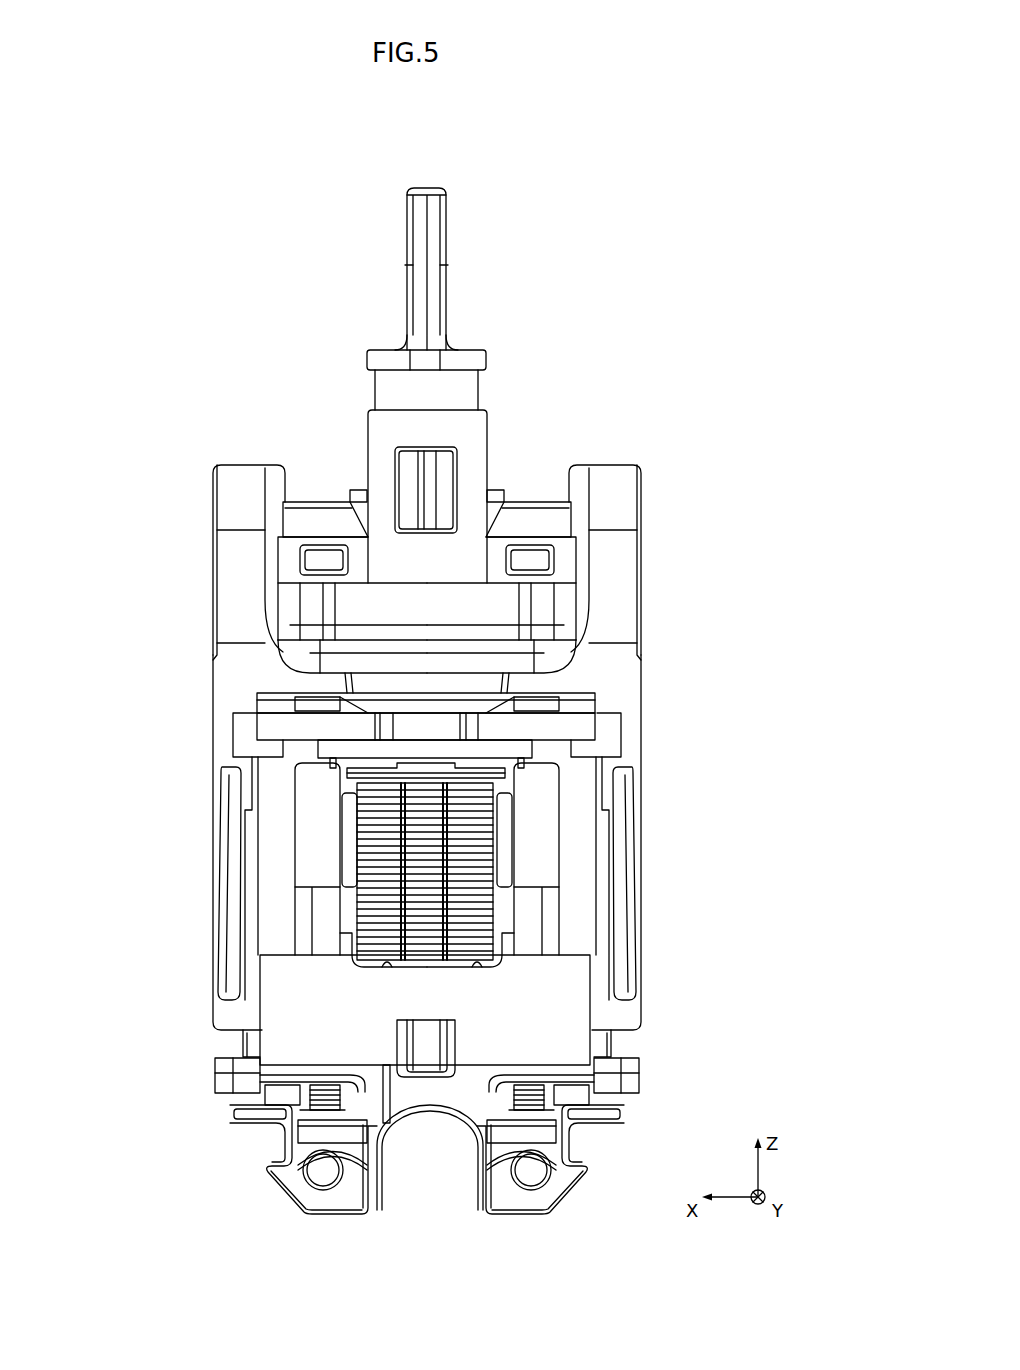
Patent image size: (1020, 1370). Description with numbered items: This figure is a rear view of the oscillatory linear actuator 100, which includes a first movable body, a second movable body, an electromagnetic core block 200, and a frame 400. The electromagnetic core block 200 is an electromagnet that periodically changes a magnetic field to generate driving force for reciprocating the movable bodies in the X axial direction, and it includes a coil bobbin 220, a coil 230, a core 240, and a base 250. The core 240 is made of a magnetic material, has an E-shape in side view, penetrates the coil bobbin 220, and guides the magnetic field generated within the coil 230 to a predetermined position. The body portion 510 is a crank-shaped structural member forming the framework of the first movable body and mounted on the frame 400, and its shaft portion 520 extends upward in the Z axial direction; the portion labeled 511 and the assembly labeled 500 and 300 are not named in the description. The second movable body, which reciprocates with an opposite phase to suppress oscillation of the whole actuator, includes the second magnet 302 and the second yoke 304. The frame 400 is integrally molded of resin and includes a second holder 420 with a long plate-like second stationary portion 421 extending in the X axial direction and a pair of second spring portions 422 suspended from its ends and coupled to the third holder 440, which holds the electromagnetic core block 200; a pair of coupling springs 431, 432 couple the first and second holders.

The oscillatory linear actuator 100 is at (235, 243).
The electromagnetic core block 200 is at (570, 1200).
The coil bobbin 220 is at (343, 777).
The coil 230 is at (388, 814).
The core 240 is at (313, 855).
The base 250 is at (635, 1083).
The output unit 300 is at (280, 333).
The second magnet 302 is at (337, 747).
The second yoke 304 is at (328, 722).
The frame 400 is at (682, 581).
The second holder 420 is at (667, 855).
The second stationary portion 421 is at (607, 725).
The second spring portions 422 is at (642, 802).
The coupling spring 431 is at (613, 478).
The coupling spring 432 is at (237, 478).
The third holder 440 is at (270, 995).
The connector 500 is at (515, 393).
The body portion 510 is at (348, 602).
The connector base 511 is at (357, 645).
The shaft portion 520 is at (420, 234).